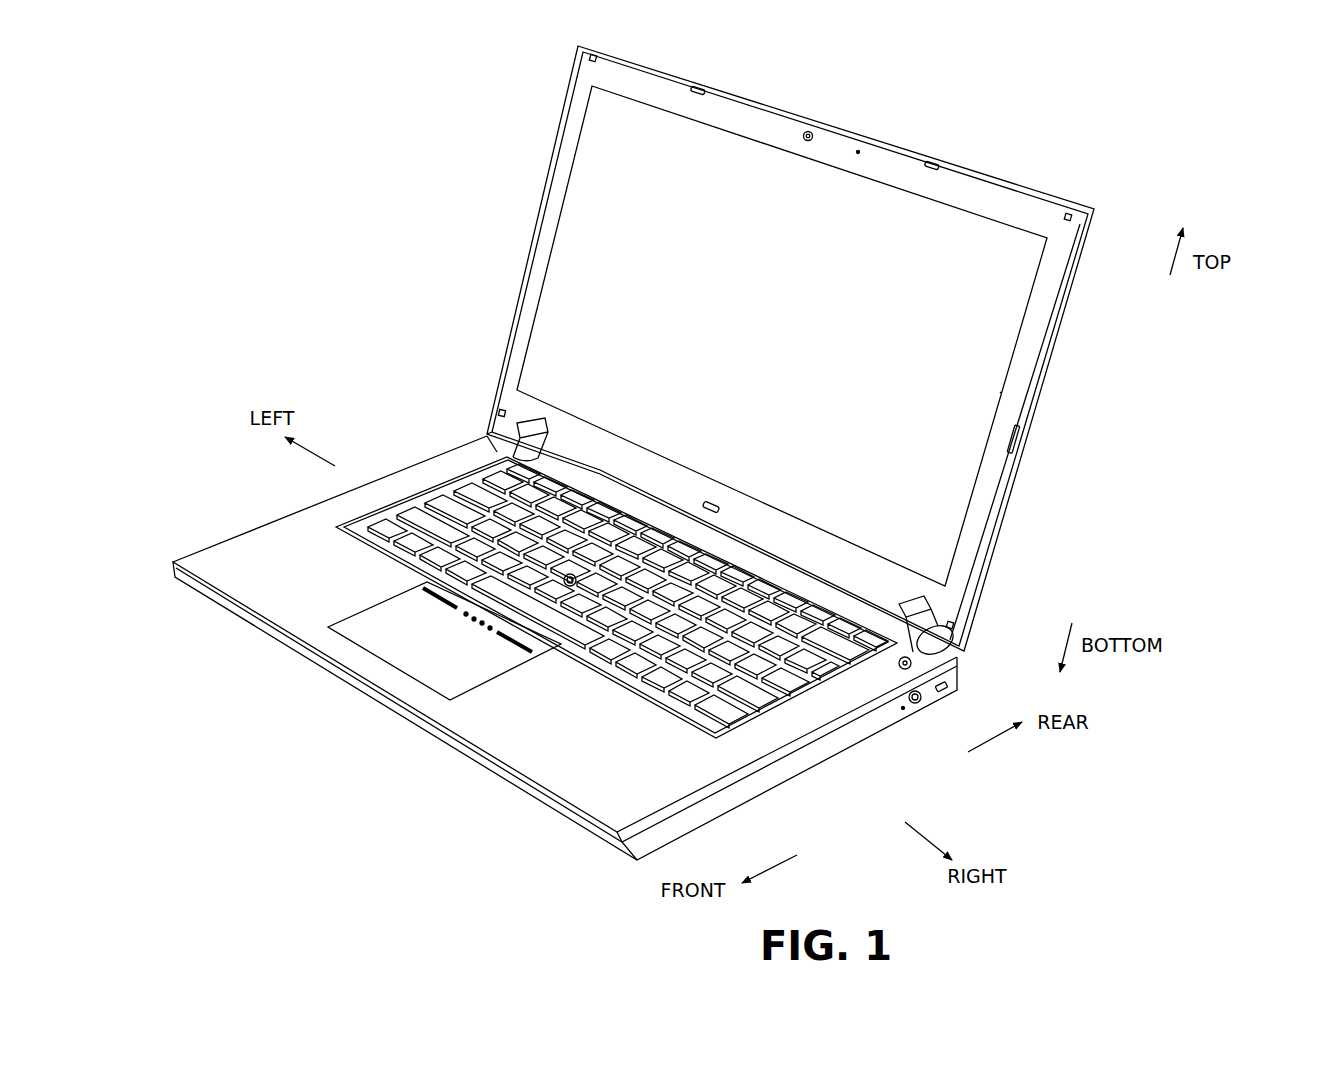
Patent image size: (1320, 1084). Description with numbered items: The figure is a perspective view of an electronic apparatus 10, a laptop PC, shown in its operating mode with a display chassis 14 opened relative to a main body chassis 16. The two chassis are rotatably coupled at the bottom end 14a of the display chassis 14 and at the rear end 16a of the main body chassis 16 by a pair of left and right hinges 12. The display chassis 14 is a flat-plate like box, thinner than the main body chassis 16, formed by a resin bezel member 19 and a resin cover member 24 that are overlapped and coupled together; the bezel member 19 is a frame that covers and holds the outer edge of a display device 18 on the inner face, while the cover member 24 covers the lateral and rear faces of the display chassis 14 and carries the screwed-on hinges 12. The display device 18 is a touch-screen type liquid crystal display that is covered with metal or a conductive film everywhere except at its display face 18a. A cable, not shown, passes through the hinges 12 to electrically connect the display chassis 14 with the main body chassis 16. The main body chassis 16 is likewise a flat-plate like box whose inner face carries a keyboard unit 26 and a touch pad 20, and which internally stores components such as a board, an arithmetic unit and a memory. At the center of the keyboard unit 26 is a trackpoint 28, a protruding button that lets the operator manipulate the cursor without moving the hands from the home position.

The electronic apparatus 10 is at (318, 121).
The hinges 12 is at (516, 440).
The display chassis 14 is at (928, 150).
The bottom end 14a is at (487, 437).
The main body chassis 16 is at (477, 778).
The rear end 16a is at (497, 452).
The display device 18 is at (762, 178).
The display face 18a is at (977, 392).
The bezel member 19 is at (838, 150).
The touch pad 20 is at (412, 656).
The cover member 24 is at (1053, 345).
The keyboard unit 26 is at (437, 503).
The trackpoint 28 is at (760, 667).